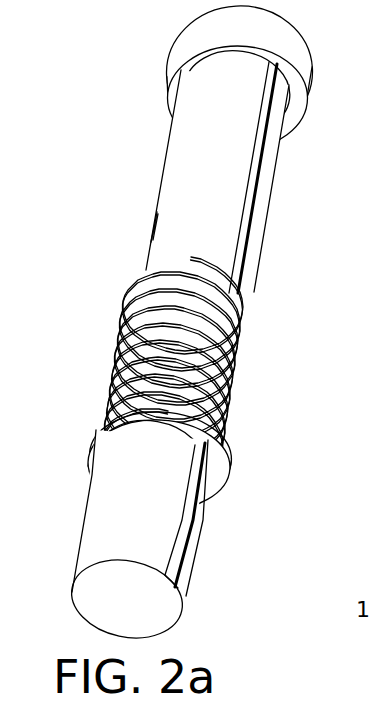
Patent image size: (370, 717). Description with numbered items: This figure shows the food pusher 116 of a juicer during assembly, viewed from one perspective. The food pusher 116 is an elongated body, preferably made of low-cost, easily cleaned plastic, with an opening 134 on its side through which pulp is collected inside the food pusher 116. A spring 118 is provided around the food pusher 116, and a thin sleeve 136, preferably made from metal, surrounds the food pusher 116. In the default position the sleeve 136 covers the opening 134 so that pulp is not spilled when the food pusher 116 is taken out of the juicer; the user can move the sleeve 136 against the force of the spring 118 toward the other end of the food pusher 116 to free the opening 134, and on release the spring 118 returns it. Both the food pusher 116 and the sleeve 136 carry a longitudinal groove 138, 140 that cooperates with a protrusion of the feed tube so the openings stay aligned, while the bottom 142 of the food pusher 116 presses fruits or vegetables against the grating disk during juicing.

The opening 134 is at (183, 325).
The food pusher 116 is at (188, 150).
The longitudinal groove 138 is at (257, 180).
The spring 118 is at (125, 338).
The bottom 142 is at (190, 343).
The sleeve 136 is at (104, 505).
The longitudinal groove 140 is at (183, 523).